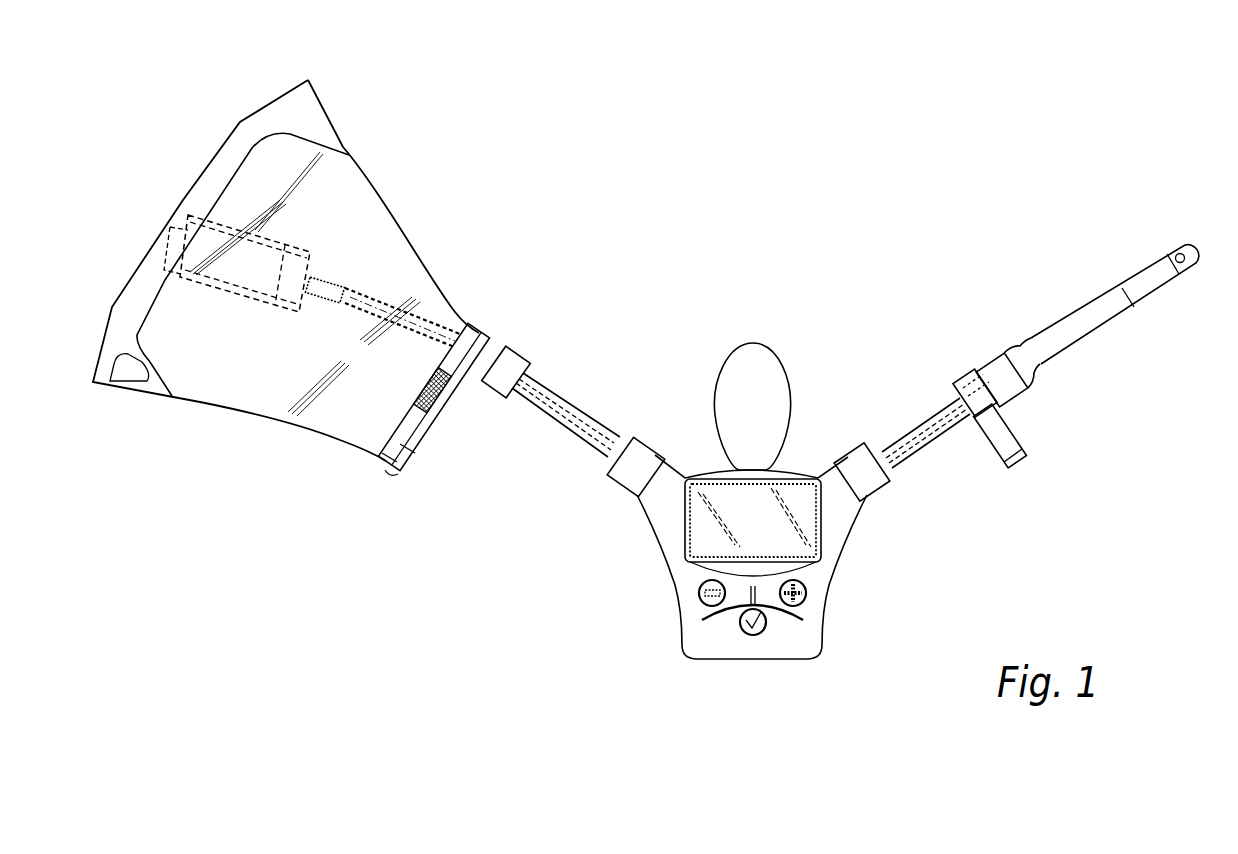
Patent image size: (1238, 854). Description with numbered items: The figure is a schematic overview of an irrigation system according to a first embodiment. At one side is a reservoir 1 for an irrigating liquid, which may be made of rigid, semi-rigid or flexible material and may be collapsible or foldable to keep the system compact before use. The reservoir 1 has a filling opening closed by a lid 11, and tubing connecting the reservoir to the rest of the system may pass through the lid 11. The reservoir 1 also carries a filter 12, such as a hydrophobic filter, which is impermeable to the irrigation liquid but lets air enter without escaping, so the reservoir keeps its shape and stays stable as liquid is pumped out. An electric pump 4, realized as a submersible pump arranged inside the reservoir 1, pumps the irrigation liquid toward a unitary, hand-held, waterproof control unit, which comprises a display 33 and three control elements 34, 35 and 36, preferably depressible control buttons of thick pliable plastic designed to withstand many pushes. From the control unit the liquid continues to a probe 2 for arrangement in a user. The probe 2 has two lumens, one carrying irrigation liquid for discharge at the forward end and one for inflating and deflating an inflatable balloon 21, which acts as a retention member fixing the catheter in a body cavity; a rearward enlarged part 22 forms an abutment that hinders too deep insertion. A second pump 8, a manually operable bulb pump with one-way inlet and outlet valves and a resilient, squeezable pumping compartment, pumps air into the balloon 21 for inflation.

The reservoir 1 is at (275, 386).
The probe 2 is at (1122, 300).
The electric pump 4 is at (265, 237).
The second pump 8 is at (747, 373).
The lid 11 is at (383, 463).
The filter 12 is at (442, 400).
The inflatable balloon 21 is at (1193, 262).
The rearward enlarged part 22 is at (1040, 363).
The display 33 is at (787, 513).
The control element 34 is at (764, 633).
The control element 35 is at (699, 594).
The control element 36 is at (806, 592).